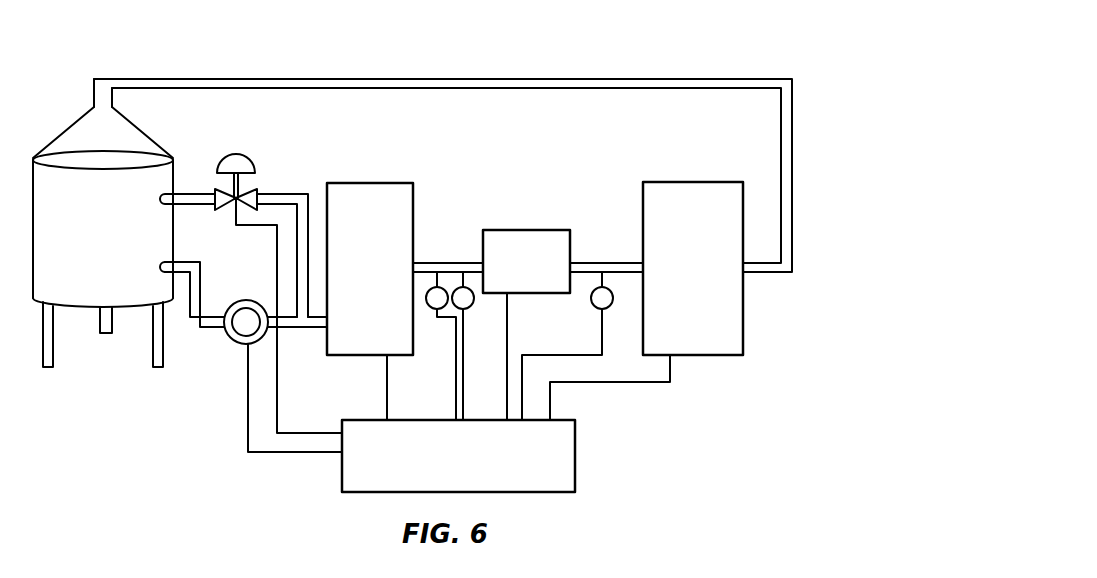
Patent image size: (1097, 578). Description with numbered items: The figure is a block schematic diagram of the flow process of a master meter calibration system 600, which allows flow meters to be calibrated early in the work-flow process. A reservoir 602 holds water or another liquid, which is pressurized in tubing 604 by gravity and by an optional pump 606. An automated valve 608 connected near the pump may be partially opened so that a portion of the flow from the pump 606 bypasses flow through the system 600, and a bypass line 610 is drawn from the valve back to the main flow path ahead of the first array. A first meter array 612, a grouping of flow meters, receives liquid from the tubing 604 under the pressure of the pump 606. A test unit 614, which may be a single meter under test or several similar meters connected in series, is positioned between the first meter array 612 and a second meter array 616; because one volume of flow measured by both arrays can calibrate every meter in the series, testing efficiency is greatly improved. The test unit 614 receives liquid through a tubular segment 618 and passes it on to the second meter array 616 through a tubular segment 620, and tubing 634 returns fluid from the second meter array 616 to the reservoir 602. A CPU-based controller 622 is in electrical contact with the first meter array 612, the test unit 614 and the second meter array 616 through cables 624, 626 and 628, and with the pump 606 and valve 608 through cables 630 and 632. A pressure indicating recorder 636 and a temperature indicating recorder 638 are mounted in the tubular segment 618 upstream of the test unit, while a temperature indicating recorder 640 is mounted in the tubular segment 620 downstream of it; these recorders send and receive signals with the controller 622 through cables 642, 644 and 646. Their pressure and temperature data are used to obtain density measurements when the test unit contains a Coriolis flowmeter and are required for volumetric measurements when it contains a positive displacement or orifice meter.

The meter calibration system 600 is at (637, 63).
The reservoir 602 is at (143, 138).
The tubing 604 is at (203, 328).
The pump 606 is at (257, 300).
The automated valve 608 is at (240, 158).
The bypass line 610 is at (299, 193).
The first meter array 612 is at (402, 183).
The test unit 614 is at (540, 230).
The second meter array 616 is at (725, 182).
The tubular segment 618 is at (458, 263).
The tubular segment 620 is at (620, 263).
The controller 622 is at (576, 470).
The cable 624 is at (387, 398).
The cable 626 is at (512, 305).
The cable 628 is at (650, 387).
The cable 630 is at (248, 410).
The cable 632 is at (278, 378).
The tubing 634 is at (791, 88).
The pressure indicating recorder 636 is at (428, 306).
The temperature indicating recorder 638 is at (470, 306).
The temperature indicating recorder 640 is at (610, 302).
The cable 642 is at (456, 367).
The cable 644 is at (463, 383).
The cable 646 is at (602, 337).